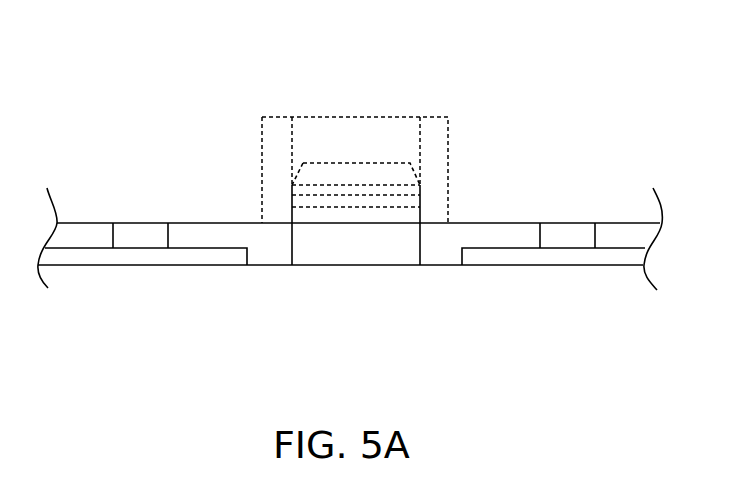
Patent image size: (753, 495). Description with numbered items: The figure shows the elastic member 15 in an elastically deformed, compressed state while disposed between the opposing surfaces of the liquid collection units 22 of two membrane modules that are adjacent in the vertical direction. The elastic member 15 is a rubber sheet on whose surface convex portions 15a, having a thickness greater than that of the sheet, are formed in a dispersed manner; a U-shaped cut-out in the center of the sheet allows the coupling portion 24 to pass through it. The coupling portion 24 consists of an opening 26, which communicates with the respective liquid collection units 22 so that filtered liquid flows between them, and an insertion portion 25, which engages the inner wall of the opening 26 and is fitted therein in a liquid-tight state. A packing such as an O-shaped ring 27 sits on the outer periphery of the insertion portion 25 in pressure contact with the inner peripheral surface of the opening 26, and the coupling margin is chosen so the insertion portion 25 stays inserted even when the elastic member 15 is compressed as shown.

The elastic member 15 is at (613, 257).
The convex portions 15a is at (567, 235).
The liquid collection units 22 is at (523, 49).
The coupling portion 24 is at (329, 190).
The insertion portion 25 is at (357, 257).
The opening 26 is at (278, 113).
The O-shaped ring 27 is at (291, 196).